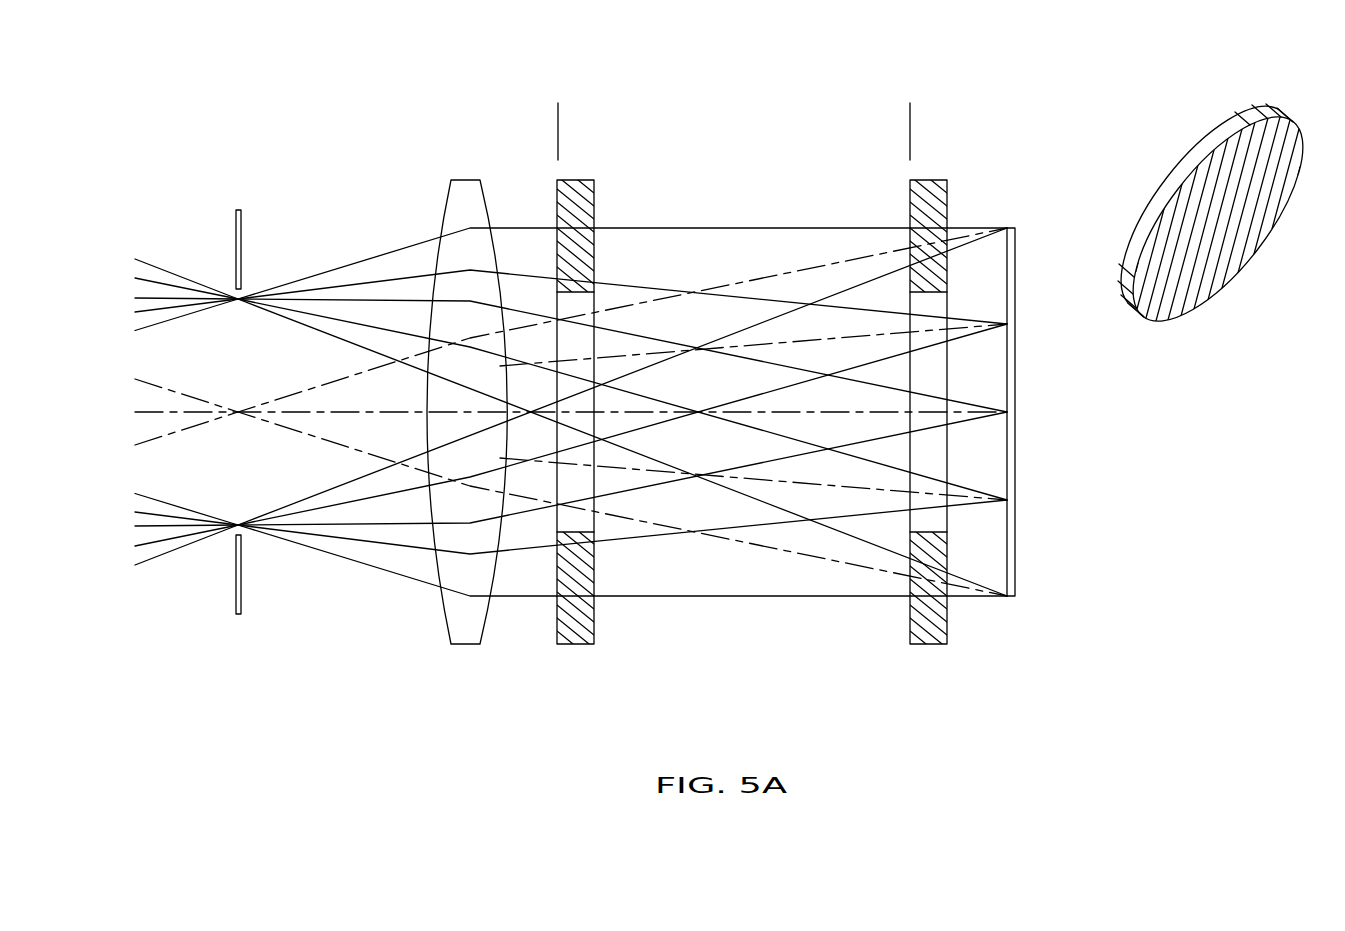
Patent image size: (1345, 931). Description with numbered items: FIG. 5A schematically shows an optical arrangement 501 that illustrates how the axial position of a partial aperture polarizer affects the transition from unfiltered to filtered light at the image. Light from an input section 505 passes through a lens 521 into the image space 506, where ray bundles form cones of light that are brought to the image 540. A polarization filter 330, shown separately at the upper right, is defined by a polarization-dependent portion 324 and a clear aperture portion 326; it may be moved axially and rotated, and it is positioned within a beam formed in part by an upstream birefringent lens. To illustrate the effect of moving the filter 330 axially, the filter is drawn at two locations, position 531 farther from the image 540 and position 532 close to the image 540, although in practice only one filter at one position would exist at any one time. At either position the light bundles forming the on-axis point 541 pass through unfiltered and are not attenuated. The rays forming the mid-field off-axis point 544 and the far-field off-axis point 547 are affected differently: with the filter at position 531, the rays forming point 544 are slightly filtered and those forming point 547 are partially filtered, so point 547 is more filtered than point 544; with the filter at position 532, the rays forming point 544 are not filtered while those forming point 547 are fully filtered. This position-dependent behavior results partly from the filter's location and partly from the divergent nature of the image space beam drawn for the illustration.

The optical system 501 is at (303, 68).
The slit array / input aperture plane 505 is at (418, 650).
The image space 506 is at (1013, 650).
The lens 521 is at (463, 646).
The filter position 531 is at (560, 128).
The filter position 532 is at (912, 128).
The image 540 is at (1016, 446).
The on-axis point 541 is at (1007, 412).
The mid-field off-axis point 544 is at (988, 329).
The far-field off-axis point 547 is at (1007, 227).
The polarization filter 330 is at (1217, 219).
The clear aperture portion 326 is at (1220, 218).
The polarization-dependent portion 324 is at (1172, 298).